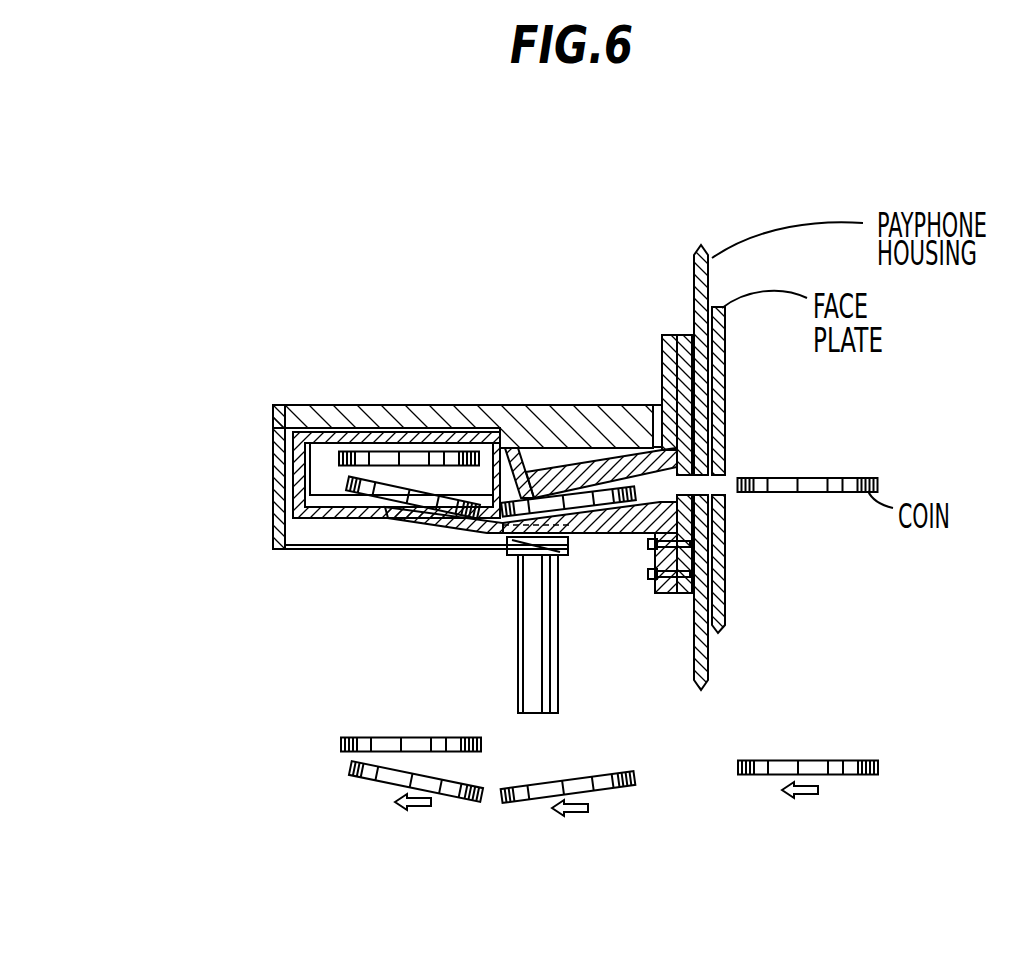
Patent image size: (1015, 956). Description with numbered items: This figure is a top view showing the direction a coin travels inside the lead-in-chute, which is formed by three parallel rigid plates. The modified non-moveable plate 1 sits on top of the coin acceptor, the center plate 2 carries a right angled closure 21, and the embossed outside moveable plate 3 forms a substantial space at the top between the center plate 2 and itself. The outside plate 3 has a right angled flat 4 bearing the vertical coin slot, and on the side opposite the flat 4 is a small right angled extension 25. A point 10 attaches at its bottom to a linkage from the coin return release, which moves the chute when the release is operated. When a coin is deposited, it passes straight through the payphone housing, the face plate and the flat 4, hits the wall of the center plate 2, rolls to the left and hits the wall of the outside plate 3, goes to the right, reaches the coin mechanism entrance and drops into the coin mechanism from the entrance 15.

The plate 1 is at (580, 422).
The center plate 2 is at (505, 428).
The outside moveable plate 3 is at (383, 513).
The right angled flat 4 is at (683, 337).
The point 10 is at (542, 633).
The entrance 15 is at (322, 468).
The right angled closure 21 is at (662, 367).
The right angled extension 25 is at (297, 488).